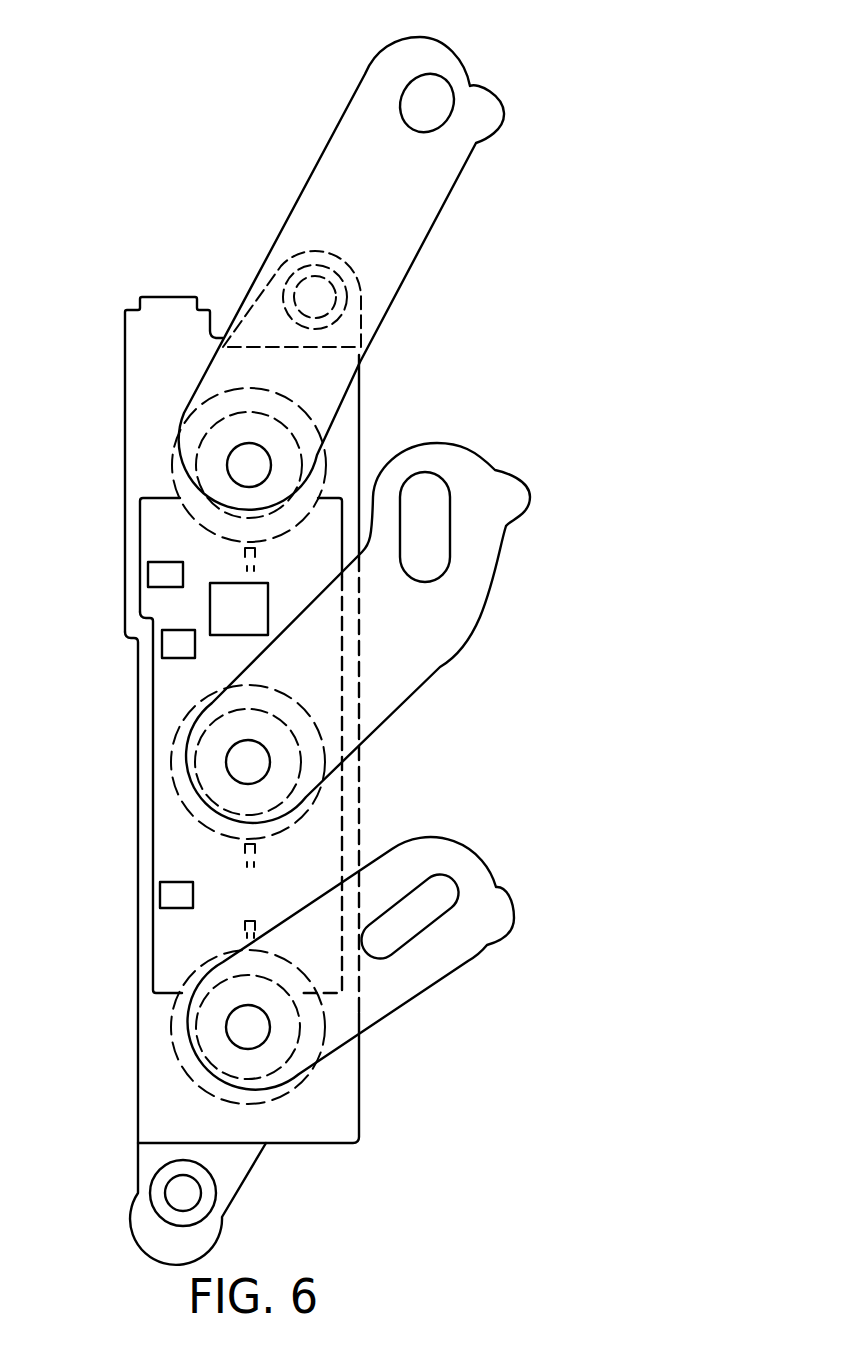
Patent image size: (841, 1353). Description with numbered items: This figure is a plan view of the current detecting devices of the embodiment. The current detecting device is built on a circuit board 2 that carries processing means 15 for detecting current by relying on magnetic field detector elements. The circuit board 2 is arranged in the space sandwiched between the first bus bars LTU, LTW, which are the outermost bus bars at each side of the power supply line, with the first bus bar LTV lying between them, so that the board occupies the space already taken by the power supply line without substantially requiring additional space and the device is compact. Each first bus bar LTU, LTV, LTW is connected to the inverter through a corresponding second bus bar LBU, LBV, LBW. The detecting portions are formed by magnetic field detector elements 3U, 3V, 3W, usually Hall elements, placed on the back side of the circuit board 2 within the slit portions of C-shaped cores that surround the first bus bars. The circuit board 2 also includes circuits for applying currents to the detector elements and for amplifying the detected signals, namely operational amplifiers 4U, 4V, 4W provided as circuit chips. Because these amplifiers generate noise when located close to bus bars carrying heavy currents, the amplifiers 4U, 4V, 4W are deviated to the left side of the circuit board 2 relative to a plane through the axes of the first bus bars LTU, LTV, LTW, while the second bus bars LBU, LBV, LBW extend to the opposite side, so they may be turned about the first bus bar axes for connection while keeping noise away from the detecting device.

The circuit board 2 is at (333, 817).
The second bus bar LBW is at (418, 235).
The second bus bar LBV is at (433, 657).
The second bus bar LBU is at (413, 987).
The first bus bar LTW is at (197, 473).
The first bus bar LTV is at (193, 758).
The first bus bar LTU is at (193, 1040).
The magnetic field detector element 3W is at (258, 562).
The magnetic field detector element 3V is at (258, 858).
The magnetic field detector element 3U is at (243, 929).
The amplifier 4W is at (157, 573).
The amplifier 4V is at (166, 643).
The amplifier 4U is at (167, 892).
The processing means 15 is at (222, 610).